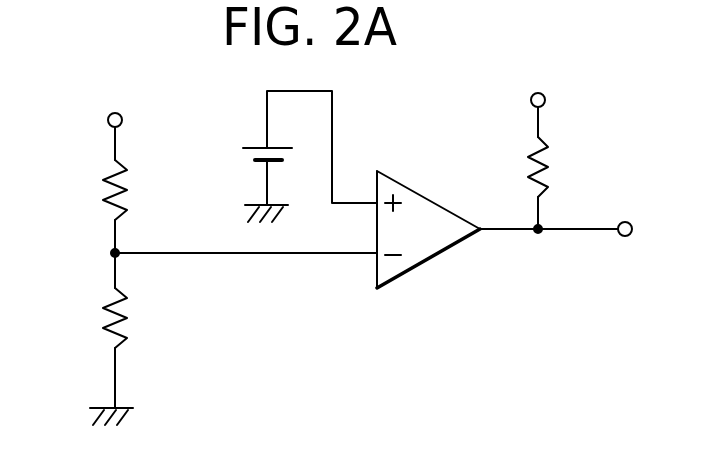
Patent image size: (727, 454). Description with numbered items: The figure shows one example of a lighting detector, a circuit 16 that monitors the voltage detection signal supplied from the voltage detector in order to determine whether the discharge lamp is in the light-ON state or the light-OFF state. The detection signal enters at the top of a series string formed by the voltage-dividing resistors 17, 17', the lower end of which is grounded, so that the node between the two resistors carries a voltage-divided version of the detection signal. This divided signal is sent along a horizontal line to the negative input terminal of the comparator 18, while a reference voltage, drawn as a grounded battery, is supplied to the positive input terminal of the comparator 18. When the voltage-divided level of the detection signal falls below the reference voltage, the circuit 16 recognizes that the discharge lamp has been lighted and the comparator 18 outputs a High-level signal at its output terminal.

The circuit 16 is at (505, 58).
The voltage-dividing resistor 17 is at (81, 190).
The voltage-dividing resistor 17' is at (81, 318).
The comparator 18 is at (433, 262).